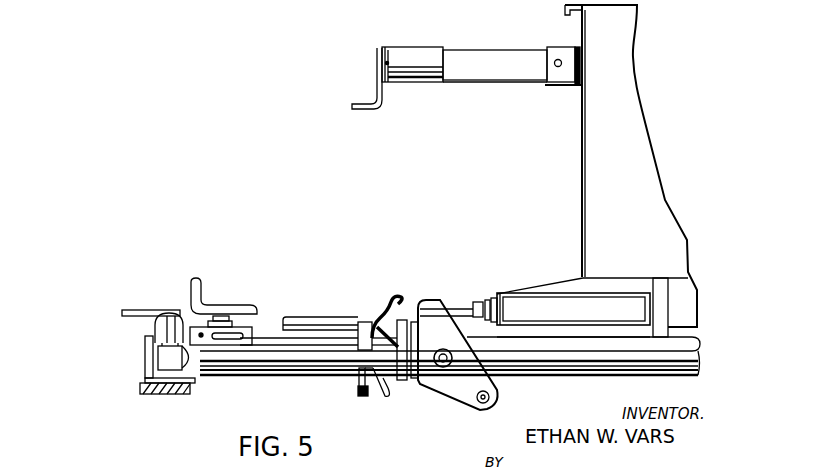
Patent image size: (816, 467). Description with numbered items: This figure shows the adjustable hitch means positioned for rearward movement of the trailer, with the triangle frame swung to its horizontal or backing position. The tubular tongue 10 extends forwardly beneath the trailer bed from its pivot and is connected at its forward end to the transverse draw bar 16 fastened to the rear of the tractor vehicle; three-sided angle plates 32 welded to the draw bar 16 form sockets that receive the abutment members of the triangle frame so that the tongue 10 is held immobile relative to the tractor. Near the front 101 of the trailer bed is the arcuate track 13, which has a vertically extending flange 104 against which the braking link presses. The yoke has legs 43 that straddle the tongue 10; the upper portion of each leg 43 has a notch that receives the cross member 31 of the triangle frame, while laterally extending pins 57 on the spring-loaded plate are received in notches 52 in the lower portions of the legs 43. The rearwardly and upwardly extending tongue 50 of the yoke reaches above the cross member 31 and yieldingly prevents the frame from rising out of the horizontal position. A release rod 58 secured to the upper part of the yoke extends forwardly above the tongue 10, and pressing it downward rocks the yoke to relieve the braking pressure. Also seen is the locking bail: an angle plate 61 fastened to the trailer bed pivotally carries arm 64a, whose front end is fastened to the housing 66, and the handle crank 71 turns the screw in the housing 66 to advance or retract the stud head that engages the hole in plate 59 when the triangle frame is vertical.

The tubular tongue 10 is at (537, 364).
The arcuate track 13 is at (540, 318).
The transverse draw bar 16 is at (142, 386).
The cross member 31 is at (401, 304).
The three-sided angle plate 32 is at (147, 358).
The leg of yoke 43 is at (390, 383).
The tongue of yoke 50 is at (385, 302).
The notch 52 is at (381, 399).
The laterally extending pin 57 is at (357, 389).
The release rod 58 is at (314, 317).
The plate 59 is at (127, 310).
The angle plate 61 is at (567, 88).
The arm 64a is at (497, 52).
The housing 66 is at (417, 52).
The handle crank 71 is at (368, 104).
The front of the trailer bed 101 is at (582, 158).
The vertically extending flange 104 is at (514, 301).